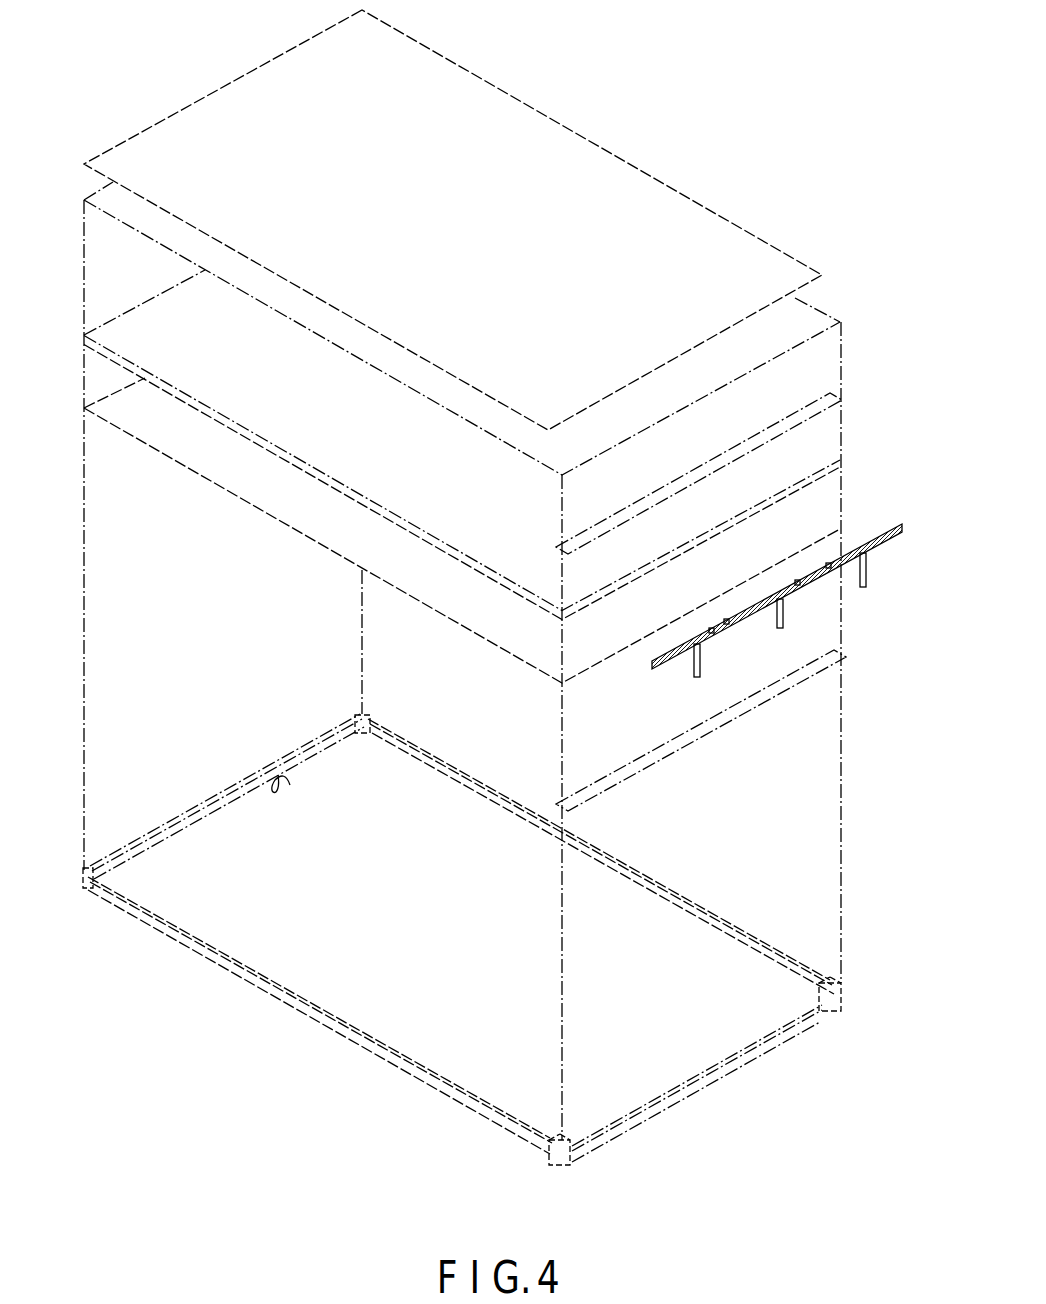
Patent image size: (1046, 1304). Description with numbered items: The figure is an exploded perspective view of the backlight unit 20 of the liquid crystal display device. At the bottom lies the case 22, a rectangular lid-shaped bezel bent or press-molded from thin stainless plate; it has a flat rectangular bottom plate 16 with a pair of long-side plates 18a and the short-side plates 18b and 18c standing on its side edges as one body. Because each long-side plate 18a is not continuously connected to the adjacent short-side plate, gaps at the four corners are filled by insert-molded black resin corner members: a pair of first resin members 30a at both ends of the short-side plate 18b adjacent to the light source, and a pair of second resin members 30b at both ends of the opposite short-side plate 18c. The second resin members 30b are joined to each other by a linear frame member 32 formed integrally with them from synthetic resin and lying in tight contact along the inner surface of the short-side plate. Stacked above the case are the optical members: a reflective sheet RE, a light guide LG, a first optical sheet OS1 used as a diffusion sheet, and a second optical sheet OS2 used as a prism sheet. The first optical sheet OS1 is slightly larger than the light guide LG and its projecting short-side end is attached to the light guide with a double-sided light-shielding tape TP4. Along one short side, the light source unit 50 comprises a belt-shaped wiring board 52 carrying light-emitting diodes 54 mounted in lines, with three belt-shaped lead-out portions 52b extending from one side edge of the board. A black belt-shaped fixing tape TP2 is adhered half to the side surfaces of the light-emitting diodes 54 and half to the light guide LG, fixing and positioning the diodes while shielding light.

The backlight unit 20 is at (555, 90).
The second optical sheet OS2 is at (634, 178).
The first optical sheet OS1 is at (812, 312).
The light-shielding tape TP4 is at (757, 437).
The fixing tape TP2 is at (763, 697).
The light guide LG is at (210, 372).
The reflective sheet RE is at (238, 490).
The light source unit 50 is at (781, 587).
The wiring board 52 is at (738, 630).
The lead-out portions 52b is at (866, 583).
The light-emitting diodes 54 is at (828, 566).
The case 22 is at (492, 949).
The bottom plate 16 is at (280, 958).
The long-side plates 18a is at (315, 1013).
The short-side plate 18b is at (733, 1060).
The short-side plate 18c is at (203, 800).
The first resin members 30a is at (843, 987).
The second resin members 30b is at (357, 716).
The frame member 32 is at (278, 775).